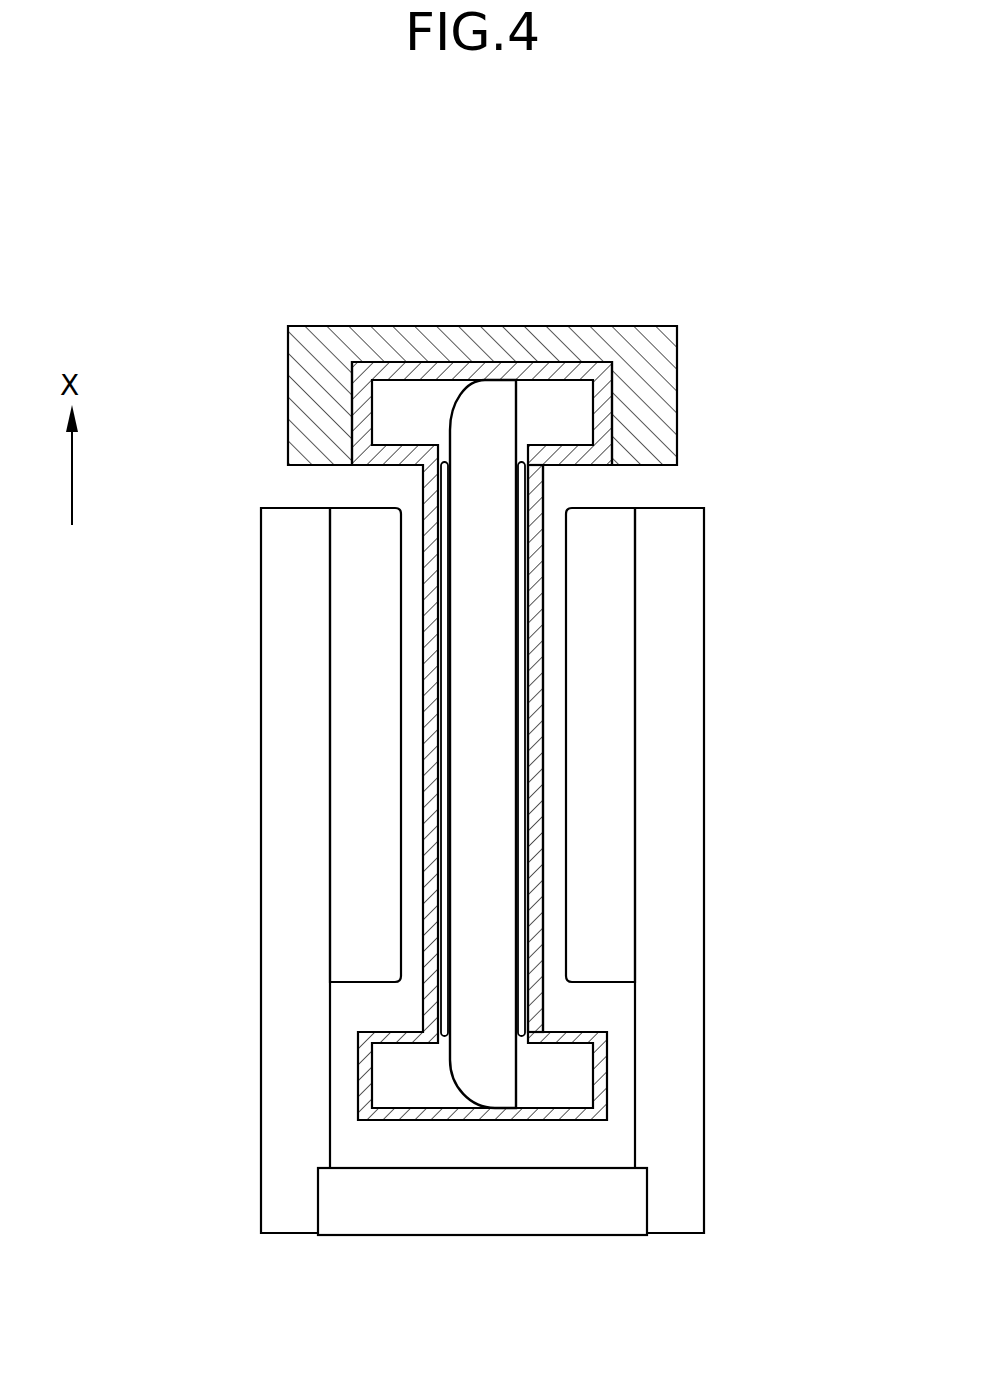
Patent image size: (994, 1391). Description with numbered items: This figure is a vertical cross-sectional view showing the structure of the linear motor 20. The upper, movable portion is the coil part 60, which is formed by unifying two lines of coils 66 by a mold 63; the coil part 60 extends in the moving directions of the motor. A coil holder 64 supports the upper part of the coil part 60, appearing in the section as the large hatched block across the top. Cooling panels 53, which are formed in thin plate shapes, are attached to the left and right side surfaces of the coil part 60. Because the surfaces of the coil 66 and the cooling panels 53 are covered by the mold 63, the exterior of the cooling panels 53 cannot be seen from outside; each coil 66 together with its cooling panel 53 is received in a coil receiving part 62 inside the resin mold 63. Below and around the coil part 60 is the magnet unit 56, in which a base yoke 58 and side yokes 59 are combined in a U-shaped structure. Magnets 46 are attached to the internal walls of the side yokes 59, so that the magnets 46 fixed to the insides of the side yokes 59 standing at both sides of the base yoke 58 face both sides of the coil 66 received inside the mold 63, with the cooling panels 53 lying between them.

The linear motor 20 is at (308, 264).
The coil part 60 is at (588, 288).
The coil holder 64 is at (637, 327).
The coil receiving part 62 is at (547, 550).
The mold 63 is at (547, 767).
The coil 66 is at (470, 780).
The cooling panel 53 is at (420, 812).
The magnet 46 is at (350, 652).
The side yoke 59 is at (275, 1053).
The base yoke 58 is at (430, 1220).
The magnet unit 56 is at (653, 1255).